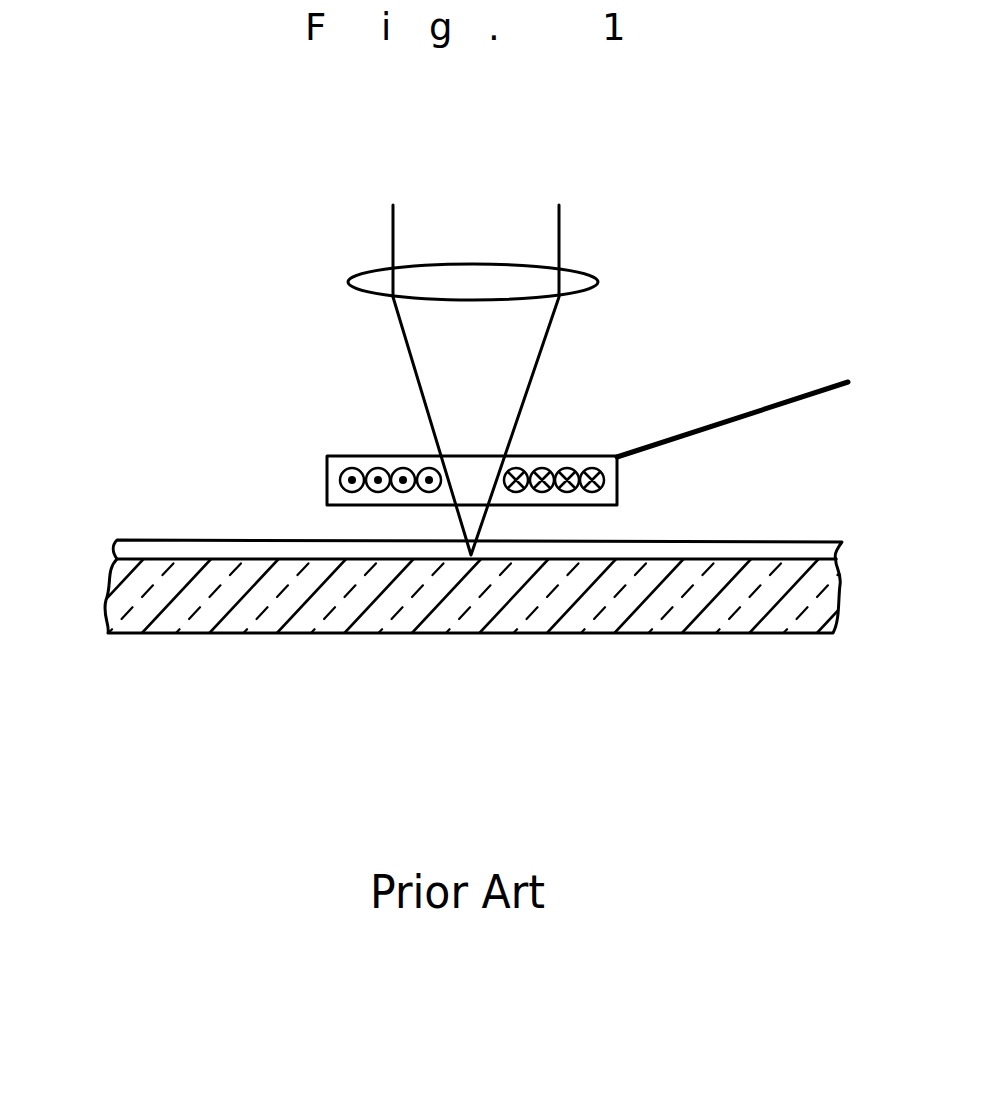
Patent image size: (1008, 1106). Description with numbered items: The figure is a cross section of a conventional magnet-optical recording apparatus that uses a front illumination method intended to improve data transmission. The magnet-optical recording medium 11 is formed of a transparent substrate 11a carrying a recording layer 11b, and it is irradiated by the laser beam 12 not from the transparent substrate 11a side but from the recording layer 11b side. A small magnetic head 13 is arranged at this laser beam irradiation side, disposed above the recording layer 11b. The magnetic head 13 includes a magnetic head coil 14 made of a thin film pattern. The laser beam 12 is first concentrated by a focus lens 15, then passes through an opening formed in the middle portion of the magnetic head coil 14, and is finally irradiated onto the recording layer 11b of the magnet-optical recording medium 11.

The magnet-optical recording medium 11 is at (463, 596).
The transparent substrate 11a is at (215, 600).
The recording layer 11b is at (255, 558).
The laser beam 12 is at (438, 408).
The magnetic head 13 is at (574, 441).
The magnetic head coil 14 is at (372, 467).
The focus lens 15 is at (590, 280).